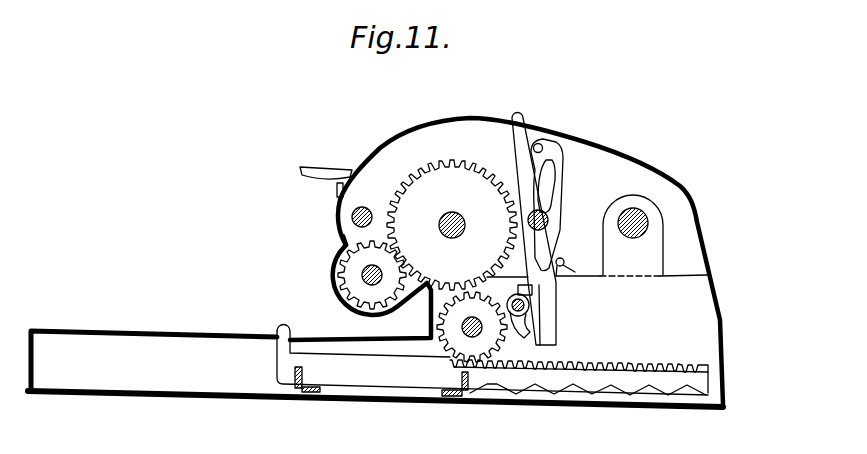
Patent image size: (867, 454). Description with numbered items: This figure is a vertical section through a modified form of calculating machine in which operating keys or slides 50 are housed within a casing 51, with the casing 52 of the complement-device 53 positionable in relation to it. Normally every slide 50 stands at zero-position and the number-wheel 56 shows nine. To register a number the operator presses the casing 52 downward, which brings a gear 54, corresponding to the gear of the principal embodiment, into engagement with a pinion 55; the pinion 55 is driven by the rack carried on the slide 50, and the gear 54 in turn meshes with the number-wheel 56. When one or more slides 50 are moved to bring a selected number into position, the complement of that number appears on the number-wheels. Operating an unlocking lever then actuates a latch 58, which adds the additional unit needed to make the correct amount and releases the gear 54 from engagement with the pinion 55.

The operating slide 50 is at (492, 360).
The casing 51 is at (368, 388).
The casing of the complement-device 52 is at (458, 123).
The complement-device 53 is at (342, 240).
The gear 54 is at (460, 167).
The pinion 55 is at (434, 327).
The number-wheel 56 is at (345, 283).
The latch 58 is at (552, 240).